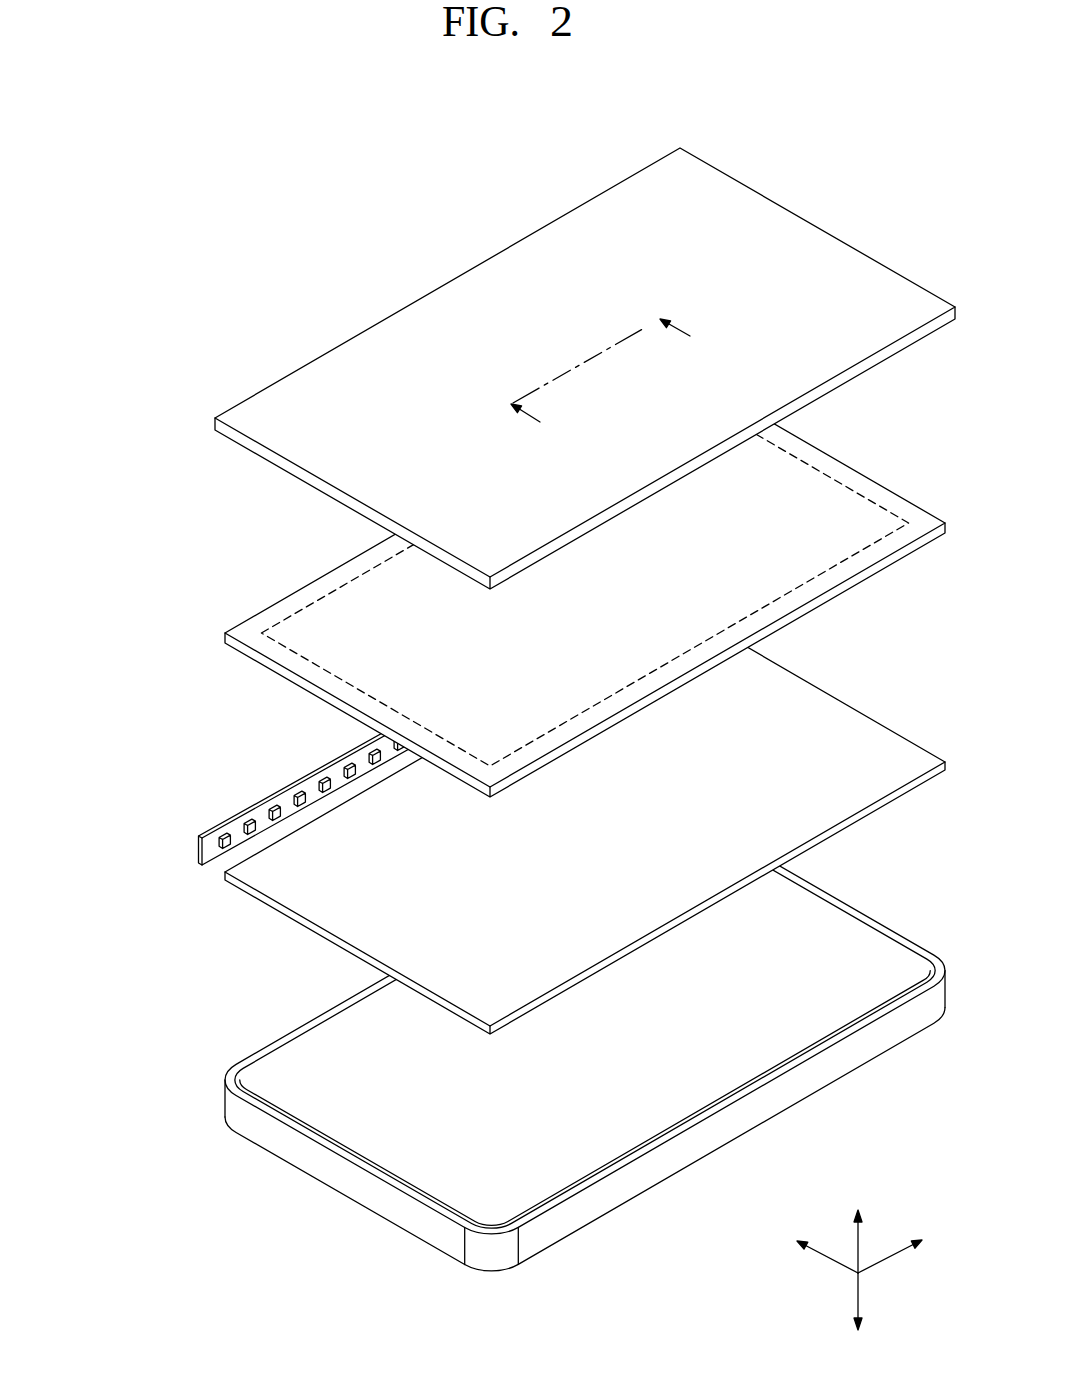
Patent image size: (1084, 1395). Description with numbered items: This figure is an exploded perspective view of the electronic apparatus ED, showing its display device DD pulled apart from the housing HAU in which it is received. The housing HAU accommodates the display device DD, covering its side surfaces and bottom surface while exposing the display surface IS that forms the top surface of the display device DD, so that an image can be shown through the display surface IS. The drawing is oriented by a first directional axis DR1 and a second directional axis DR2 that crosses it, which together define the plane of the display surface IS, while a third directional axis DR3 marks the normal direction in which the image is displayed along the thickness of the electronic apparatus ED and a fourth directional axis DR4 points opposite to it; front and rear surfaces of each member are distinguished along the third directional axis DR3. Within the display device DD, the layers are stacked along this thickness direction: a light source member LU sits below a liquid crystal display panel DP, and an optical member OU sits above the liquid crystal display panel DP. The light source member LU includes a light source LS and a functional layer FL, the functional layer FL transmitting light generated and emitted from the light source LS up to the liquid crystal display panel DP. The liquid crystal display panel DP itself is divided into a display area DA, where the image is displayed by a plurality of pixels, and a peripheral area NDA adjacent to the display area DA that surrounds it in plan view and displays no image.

The electronic apparatus ED is at (458, 239).
The display device DD is at (88, 412).
The optical member OU is at (212, 420).
The display surface IS is at (803, 244).
The liquid crystal display panel DP is at (220, 633).
The display area DA is at (320, 614).
The peripheral area NDA is at (267, 616).
The light source member LU is at (137, 812).
The light source LS is at (210, 837).
The functional layer FL is at (221, 875).
The housing HAU is at (221, 1100).
The first directional axis DR1 is at (910, 1248).
The second directional axis DR2 is at (805, 1248).
The third directional axis DR3 is at (858, 1229).
The fourth directional axis DR4 is at (858, 1316).